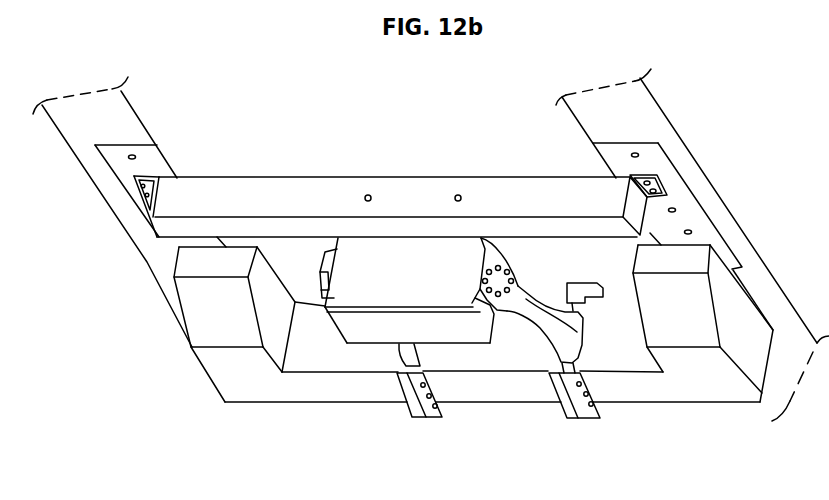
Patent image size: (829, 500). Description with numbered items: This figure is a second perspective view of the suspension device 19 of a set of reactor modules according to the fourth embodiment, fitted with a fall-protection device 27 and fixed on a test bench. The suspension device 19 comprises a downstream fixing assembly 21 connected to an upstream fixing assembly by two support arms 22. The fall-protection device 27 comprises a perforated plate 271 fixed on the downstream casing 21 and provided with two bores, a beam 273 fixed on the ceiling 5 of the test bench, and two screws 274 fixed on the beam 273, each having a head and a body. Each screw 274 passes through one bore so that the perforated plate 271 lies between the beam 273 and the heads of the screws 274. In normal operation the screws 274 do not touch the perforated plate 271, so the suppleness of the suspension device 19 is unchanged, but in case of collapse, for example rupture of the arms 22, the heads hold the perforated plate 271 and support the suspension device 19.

The ceiling 5 is at (80, 124).
The suspension device 19 is at (631, 435).
The downstream fixing assembly 21 is at (440, 330).
The support arm 22 is at (580, 338).
The fall-protection device 27 is at (292, 179).
The perforated plate 271 is at (405, 270).
The beam 273 is at (527, 197).
The screw 274 is at (366, 195).